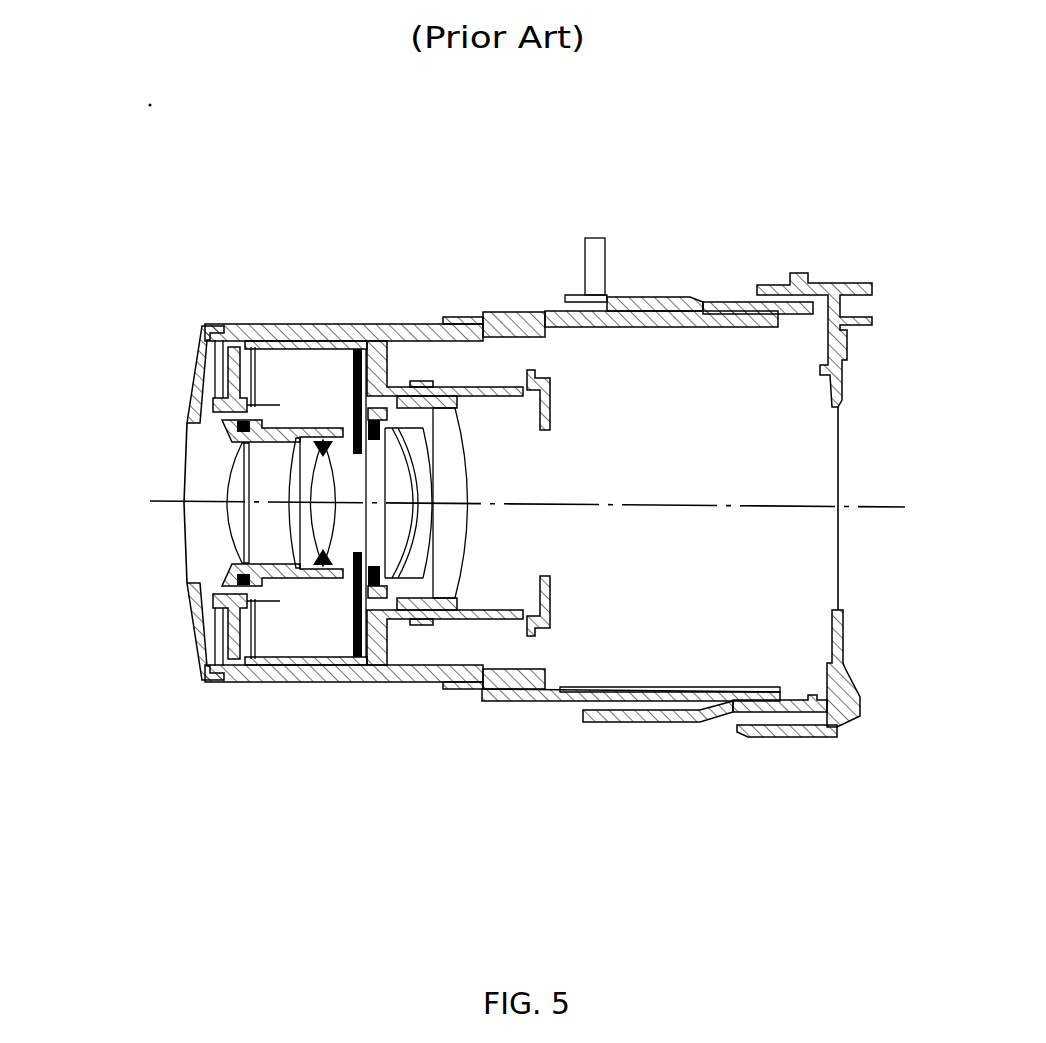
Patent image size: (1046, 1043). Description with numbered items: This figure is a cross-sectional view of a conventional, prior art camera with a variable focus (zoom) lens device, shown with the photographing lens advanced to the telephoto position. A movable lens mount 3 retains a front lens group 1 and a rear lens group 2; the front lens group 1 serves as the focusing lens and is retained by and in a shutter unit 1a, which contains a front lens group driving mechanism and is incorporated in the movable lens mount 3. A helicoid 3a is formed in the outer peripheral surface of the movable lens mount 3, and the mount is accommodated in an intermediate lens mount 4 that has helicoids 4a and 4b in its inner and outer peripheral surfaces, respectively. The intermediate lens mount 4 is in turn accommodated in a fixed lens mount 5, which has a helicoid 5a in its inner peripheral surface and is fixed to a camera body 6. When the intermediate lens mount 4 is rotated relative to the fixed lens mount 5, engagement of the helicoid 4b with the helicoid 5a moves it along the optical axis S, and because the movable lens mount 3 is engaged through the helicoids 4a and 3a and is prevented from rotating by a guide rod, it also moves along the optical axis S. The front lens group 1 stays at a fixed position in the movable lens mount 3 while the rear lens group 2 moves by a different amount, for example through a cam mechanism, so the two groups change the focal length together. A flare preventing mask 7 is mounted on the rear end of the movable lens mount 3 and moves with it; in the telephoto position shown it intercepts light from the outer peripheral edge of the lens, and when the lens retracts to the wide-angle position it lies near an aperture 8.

The front lens group 1 is at (235, 522).
The shutter unit 1a is at (292, 442).
The rear lens group 2 is at (463, 542).
The movable lens mount 3 is at (412, 330).
The helicoid 3a is at (520, 323).
The intermediate lens mount 4 is at (553, 701).
The helicoid 4a is at (630, 687).
The helicoid 4b is at (633, 722).
The fixed lens mount 5 is at (716, 307).
The helicoid 5a is at (650, 305).
The camera body 6 is at (848, 700).
The flare preventing mask 7 is at (553, 400).
The aperture 8 is at (840, 607).
The optical axis S is at (853, 505).